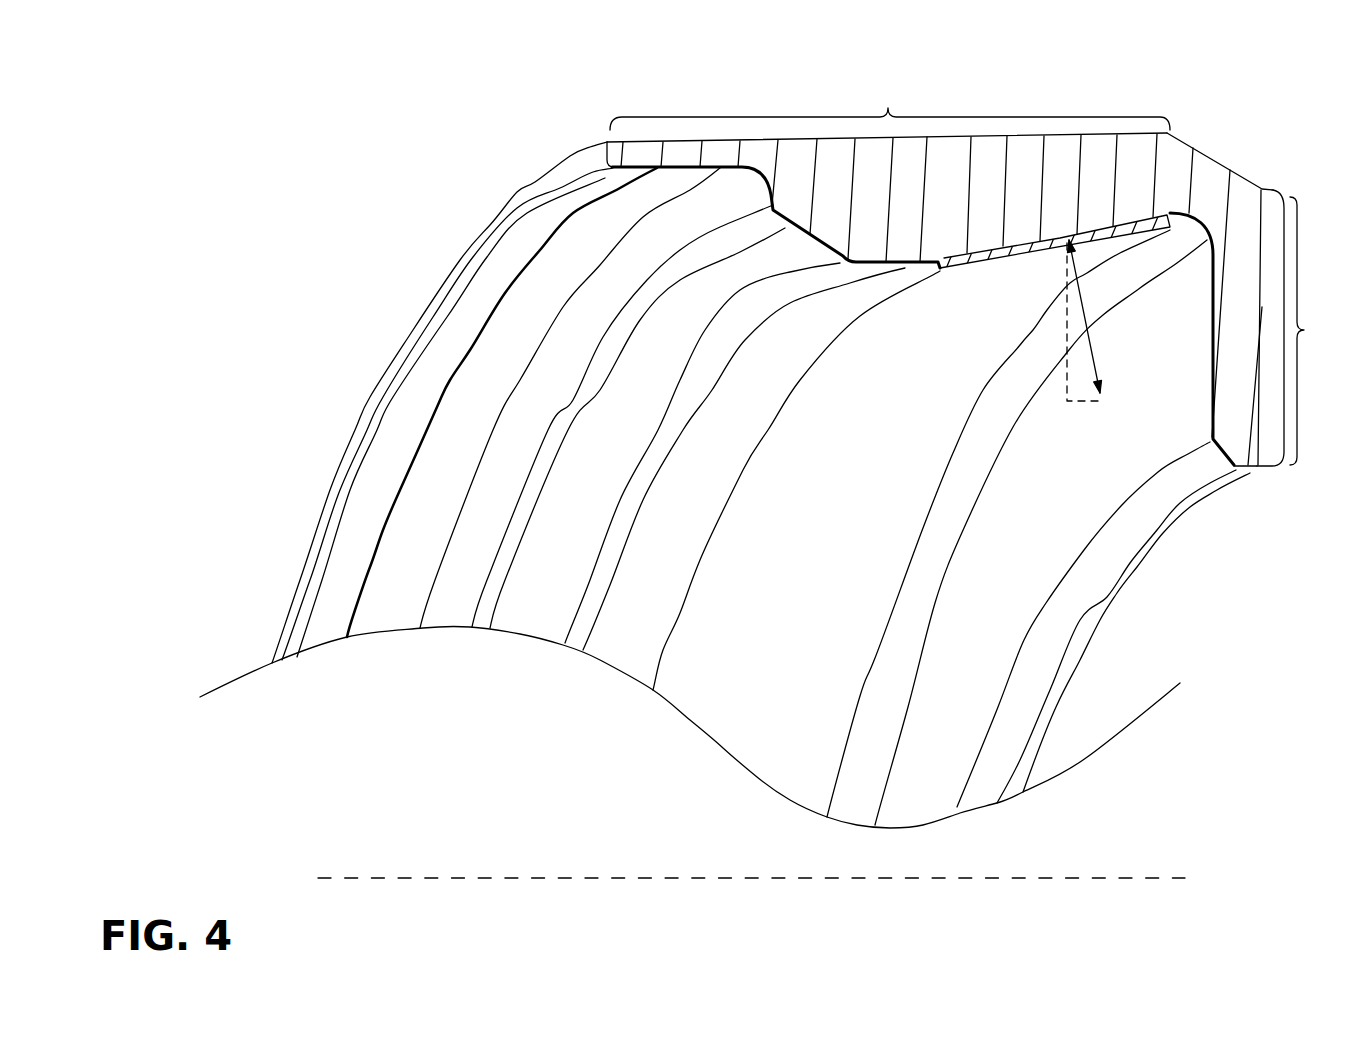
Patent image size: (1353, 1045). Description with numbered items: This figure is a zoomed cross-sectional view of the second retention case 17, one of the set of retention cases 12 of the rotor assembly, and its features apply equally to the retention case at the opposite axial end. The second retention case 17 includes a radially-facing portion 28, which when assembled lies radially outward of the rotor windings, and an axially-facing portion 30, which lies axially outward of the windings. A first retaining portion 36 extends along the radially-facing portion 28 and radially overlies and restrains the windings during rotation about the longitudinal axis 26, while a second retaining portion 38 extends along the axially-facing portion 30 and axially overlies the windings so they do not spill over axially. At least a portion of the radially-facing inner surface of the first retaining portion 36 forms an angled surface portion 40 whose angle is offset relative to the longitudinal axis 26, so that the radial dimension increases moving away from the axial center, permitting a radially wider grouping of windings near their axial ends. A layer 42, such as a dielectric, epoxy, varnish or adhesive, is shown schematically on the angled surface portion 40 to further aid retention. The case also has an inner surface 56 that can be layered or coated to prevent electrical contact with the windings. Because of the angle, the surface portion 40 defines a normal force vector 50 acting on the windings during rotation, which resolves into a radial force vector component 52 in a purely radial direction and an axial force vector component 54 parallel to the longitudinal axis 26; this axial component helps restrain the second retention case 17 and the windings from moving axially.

The set of retention cases 12 is at (492, 97).
The second retention case 17 is at (1140, 173).
The longitudinal axis 26 is at (1150, 878).
The radially-facing portion 28 is at (729, 137).
The axially-facing portion 30 is at (1270, 247).
The first retaining portion 36 is at (890, 104).
The second retaining portion 38 is at (1309, 331).
The angled surface portion 40 is at (1028, 232).
The layer 42 is at (1175, 212).
The normal force vector 50 is at (1095, 353).
The radial force vector component 52 is at (1067, 340).
The axial force vector component 54 is at (1098, 405).
The inner surface 56 is at (626, 446).